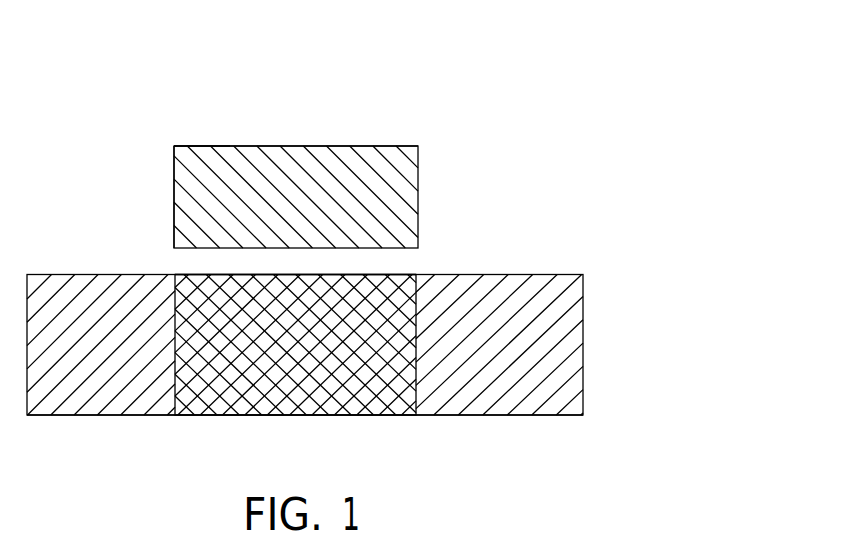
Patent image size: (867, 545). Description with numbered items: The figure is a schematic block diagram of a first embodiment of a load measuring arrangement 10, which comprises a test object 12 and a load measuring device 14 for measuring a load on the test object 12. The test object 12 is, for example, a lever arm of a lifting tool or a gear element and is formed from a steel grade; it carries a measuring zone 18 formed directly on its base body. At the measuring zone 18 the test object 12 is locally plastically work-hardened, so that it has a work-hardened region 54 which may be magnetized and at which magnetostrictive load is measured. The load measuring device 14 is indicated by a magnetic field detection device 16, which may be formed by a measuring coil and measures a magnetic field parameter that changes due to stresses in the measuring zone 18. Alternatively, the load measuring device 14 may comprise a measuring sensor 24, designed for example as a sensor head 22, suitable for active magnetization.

The load measuring arrangement 10 is at (305, 223).
The test object 12 is at (78, 382).
The load measuring device 14 is at (295, 137).
The magnetic field detection device 16 is at (323, 177).
The measuring zone 18 is at (328, 273).
The sensor head 22 is at (173, 180).
The measuring sensor 24 is at (193, 148).
The work-hardened region 54 is at (267, 383).